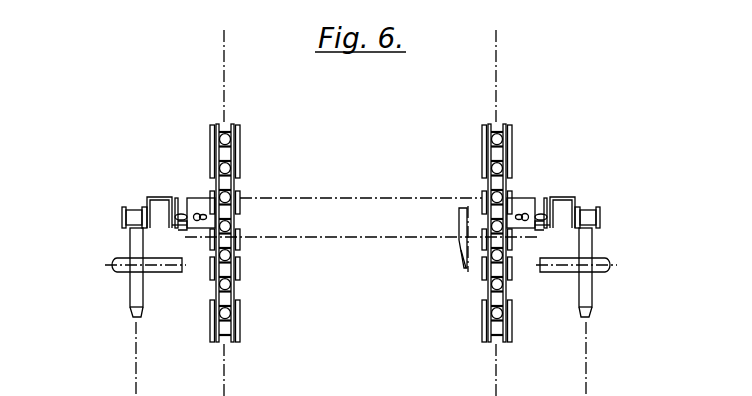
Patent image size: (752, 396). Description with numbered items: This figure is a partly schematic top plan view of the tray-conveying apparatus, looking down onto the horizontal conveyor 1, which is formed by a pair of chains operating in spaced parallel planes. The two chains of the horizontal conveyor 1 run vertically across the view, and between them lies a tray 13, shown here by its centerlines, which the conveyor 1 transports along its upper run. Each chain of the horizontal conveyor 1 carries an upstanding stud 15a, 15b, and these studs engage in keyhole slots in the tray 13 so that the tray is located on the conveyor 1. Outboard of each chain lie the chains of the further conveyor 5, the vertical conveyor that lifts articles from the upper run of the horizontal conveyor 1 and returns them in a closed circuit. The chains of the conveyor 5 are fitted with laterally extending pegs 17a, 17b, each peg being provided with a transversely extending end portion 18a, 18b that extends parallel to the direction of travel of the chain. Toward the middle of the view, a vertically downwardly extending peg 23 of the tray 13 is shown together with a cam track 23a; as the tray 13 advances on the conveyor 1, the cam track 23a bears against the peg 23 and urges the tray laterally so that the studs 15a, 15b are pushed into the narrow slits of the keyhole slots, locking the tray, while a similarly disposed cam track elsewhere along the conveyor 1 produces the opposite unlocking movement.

The horizontal conveyor 1 is at (242, 151).
The further conveyor 5 is at (120, 212).
The tray 13 is at (361, 196).
The upstanding stud 15a is at (197, 213).
The upstanding stud 15b is at (524, 213).
The laterally extending peg 17a is at (180, 213).
The laterally extending peg 17b is at (543, 213).
The transversely extending end portion 18a is at (183, 229).
The transversely extending end portion 18b is at (538, 229).
The vertically downwardly extending peg 23 is at (457, 215).
The cam track 23a is at (463, 266).